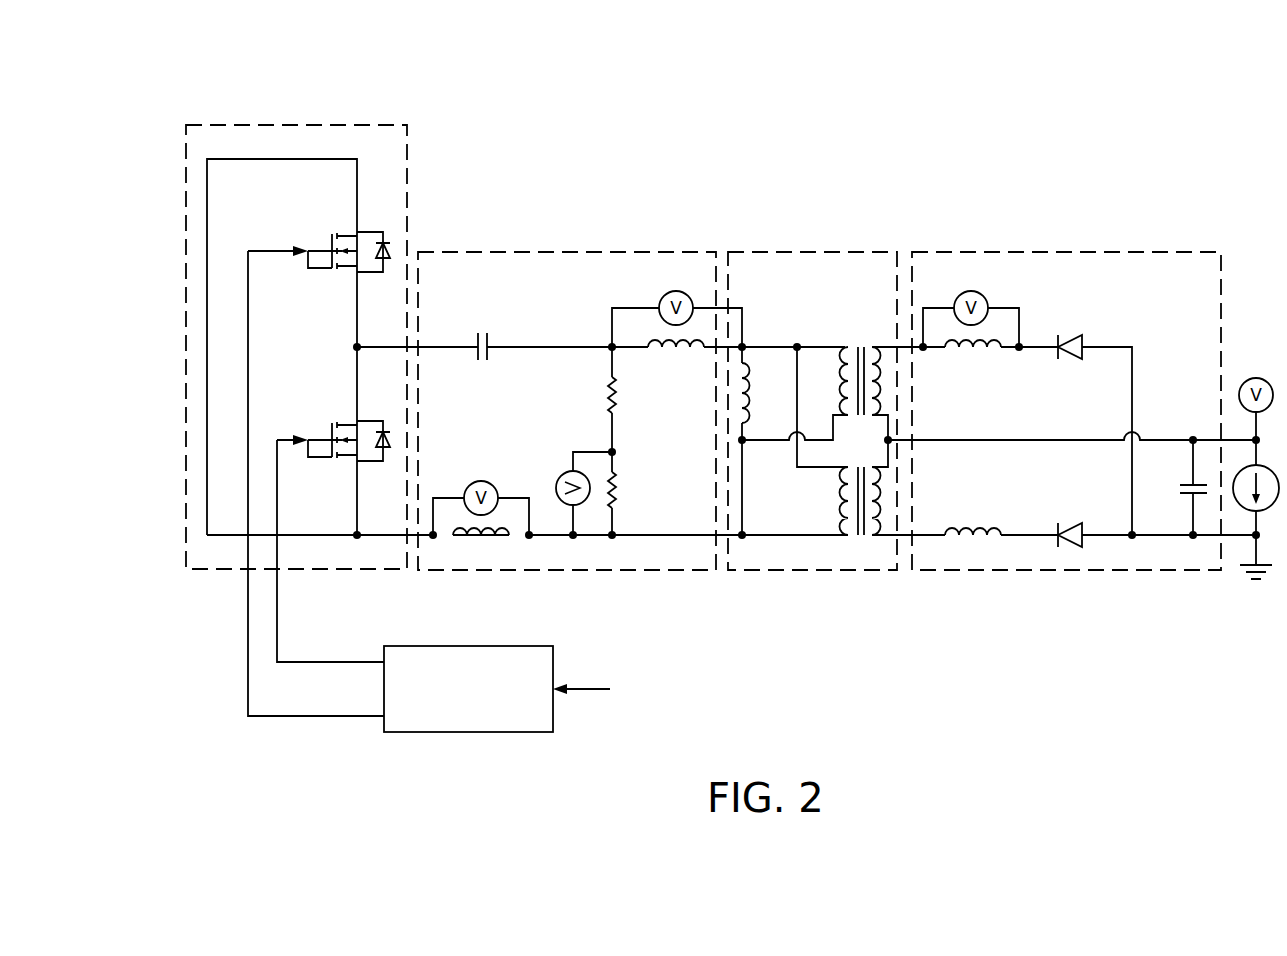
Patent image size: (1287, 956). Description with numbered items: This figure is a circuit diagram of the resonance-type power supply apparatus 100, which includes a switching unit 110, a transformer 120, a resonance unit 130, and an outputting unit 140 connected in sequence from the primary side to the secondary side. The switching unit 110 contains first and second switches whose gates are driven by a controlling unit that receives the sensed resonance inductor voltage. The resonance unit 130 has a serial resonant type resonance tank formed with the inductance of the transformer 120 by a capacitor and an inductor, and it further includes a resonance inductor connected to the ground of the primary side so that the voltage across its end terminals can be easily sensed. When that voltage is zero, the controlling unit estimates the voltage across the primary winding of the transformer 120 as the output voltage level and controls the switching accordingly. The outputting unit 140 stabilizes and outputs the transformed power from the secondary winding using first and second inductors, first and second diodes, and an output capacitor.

The resonance-type power supply apparatus 100 is at (815, 127).
The switching unit 110 is at (343, 125).
The transformer 120 is at (835, 252).
The resonance unit 130 is at (657, 252).
The outputting unit 140 is at (1165, 252).